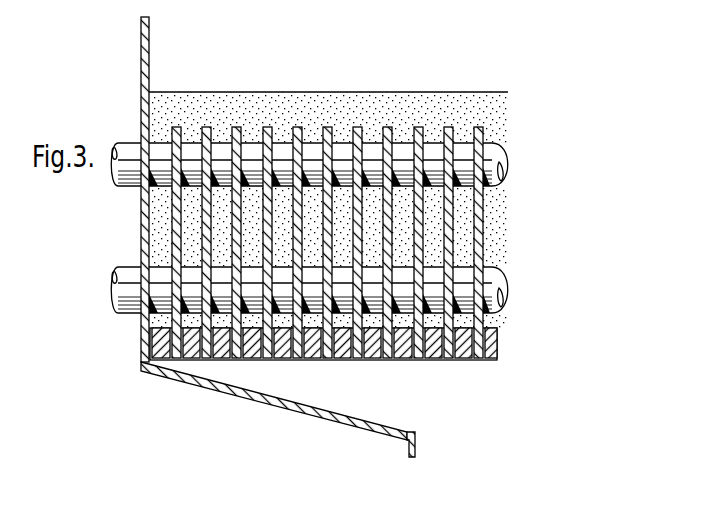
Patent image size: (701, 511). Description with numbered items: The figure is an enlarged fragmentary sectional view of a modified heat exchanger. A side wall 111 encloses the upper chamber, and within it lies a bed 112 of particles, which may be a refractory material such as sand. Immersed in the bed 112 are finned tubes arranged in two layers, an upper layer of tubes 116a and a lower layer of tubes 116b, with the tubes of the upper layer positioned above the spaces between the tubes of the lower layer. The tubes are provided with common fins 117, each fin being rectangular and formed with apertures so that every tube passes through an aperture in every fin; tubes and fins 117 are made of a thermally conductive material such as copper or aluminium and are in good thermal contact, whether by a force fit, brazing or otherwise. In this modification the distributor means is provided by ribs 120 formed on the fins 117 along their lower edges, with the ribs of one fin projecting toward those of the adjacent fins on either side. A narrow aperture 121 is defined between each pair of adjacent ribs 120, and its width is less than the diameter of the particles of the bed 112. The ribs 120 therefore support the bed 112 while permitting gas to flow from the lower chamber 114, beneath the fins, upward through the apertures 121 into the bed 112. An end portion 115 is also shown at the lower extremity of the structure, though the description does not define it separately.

The side wall 111 is at (140, 27).
The bed of particles 112 is at (213, 103).
The lower chamber 114 is at (308, 383).
The end flange of strip 115 is at (411, 448).
The upper layer of finned tubes 116a is at (133, 180).
The lower layer of finned tubes 116b is at (133, 280).
The fins 117 is at (297, 126).
The ribs 120 is at (188, 362).
The narrow aperture 121 is at (192, 363).